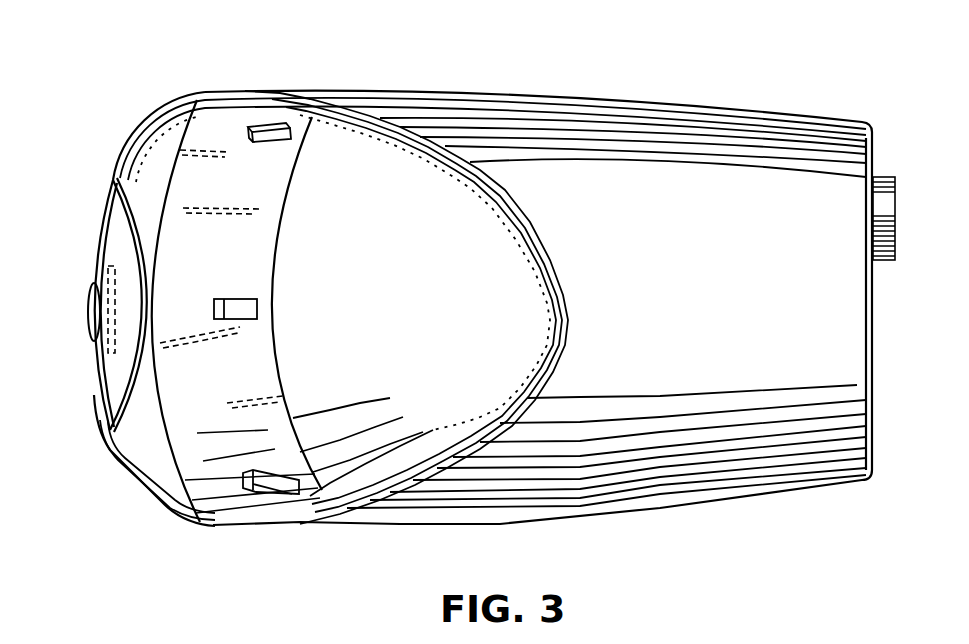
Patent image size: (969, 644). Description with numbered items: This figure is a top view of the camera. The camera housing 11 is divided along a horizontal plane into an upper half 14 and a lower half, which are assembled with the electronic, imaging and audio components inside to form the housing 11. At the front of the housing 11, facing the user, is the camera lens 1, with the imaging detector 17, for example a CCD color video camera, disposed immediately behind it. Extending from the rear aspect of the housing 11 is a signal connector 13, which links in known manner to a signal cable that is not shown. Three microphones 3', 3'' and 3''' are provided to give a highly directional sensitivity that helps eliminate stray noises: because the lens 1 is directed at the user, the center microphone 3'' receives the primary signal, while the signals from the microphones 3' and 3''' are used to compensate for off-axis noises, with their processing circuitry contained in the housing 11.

The camera lens 1 is at (88, 308).
The imaging detector 17 is at (107, 336).
The microphone 3' is at (279, 85).
The center microphone 3'' is at (236, 277).
The microphone 3''' is at (271, 534).
The camera housing 11 is at (728, 328).
The signal connector 13 is at (890, 177).
The upper half 14 is at (809, 230).